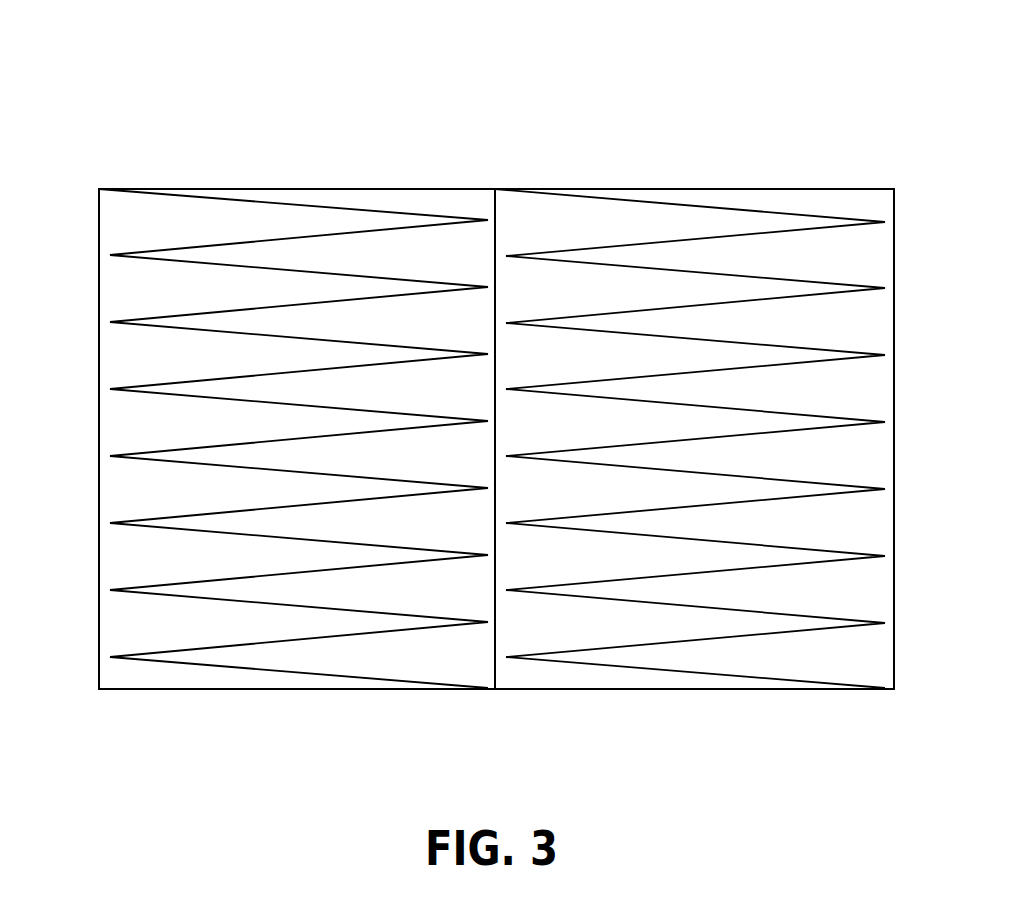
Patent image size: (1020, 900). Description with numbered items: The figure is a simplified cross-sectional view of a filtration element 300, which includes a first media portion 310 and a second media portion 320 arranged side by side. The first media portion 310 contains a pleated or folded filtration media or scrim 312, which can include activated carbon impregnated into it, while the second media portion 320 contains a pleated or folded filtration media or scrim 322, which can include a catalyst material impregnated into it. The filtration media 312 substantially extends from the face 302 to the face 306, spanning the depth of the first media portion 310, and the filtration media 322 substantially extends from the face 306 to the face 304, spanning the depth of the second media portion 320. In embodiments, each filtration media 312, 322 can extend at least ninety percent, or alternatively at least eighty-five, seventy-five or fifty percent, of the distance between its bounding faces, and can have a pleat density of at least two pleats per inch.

The filtration element 300 is at (489, 397).
The face 302 is at (259, 475).
The face 304 is at (721, 475).
The face 306 is at (496, 662).
The first media portion 310 is at (193, 682).
The pleated or folded filtration media or scrim 312 is at (290, 675).
The second media portion 320 is at (608, 681).
The pleated or folded filtration media or scrim 322 is at (710, 677).